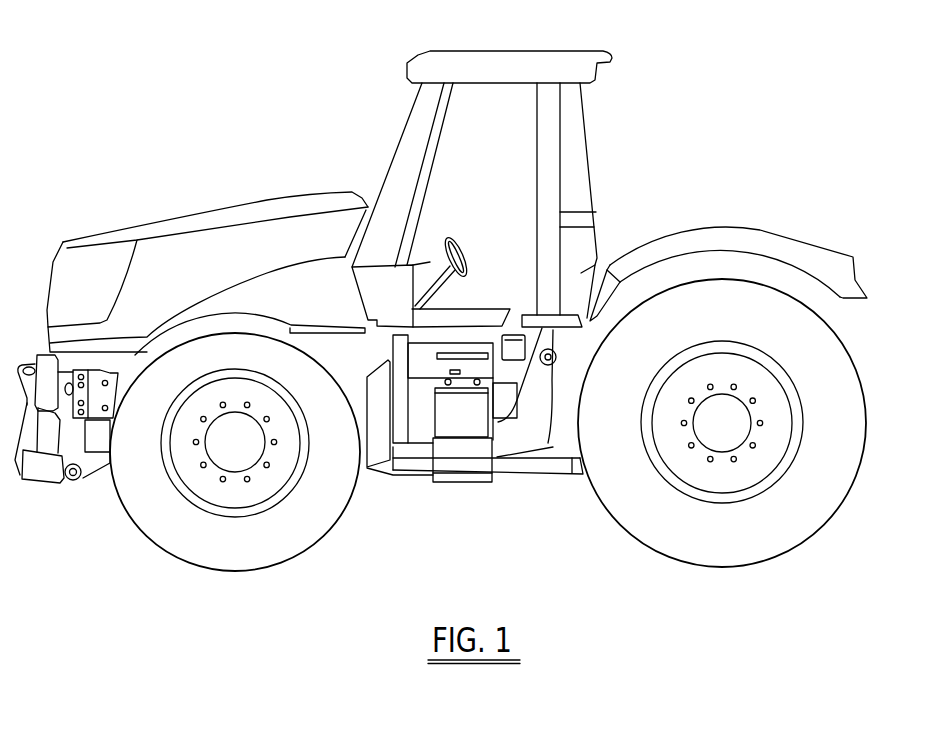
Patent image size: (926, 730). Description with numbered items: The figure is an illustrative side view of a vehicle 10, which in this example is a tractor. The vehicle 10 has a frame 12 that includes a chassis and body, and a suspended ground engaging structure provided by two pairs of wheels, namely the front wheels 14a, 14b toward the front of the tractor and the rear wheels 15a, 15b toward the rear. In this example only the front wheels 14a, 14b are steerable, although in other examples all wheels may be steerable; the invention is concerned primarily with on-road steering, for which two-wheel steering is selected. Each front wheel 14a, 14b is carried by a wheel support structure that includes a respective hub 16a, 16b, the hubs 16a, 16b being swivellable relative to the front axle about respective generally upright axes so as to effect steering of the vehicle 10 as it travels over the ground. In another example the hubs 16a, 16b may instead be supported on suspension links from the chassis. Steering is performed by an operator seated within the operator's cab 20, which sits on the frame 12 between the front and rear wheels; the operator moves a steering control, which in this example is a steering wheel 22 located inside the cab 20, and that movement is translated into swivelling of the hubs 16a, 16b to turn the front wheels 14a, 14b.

The vehicle 10 is at (441, 361).
The frame 12 is at (523, 468).
The front wheel 14a is at (234, 508).
The front wheel 14b is at (234, 508).
The rear wheel 15a is at (722, 465).
The rear wheel 15b is at (856, 649).
The hub 16a is at (297, 524).
The hub 16b is at (242, 450).
The operator's cab 20 is at (478, 189).
The steering wheel 22 is at (466, 257).